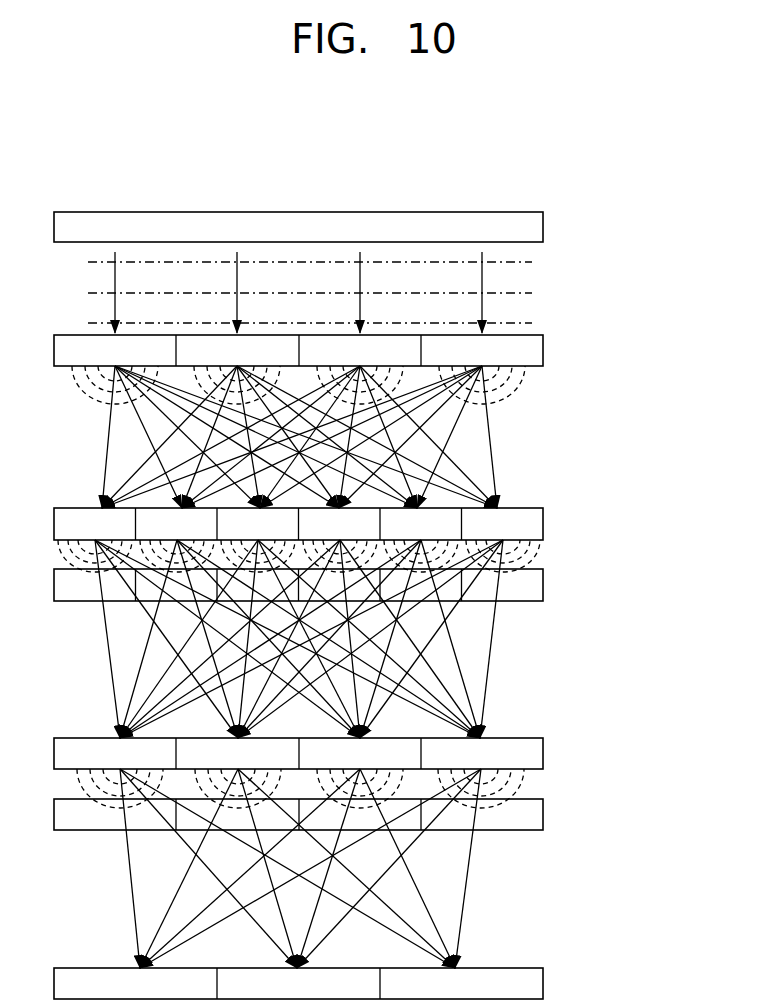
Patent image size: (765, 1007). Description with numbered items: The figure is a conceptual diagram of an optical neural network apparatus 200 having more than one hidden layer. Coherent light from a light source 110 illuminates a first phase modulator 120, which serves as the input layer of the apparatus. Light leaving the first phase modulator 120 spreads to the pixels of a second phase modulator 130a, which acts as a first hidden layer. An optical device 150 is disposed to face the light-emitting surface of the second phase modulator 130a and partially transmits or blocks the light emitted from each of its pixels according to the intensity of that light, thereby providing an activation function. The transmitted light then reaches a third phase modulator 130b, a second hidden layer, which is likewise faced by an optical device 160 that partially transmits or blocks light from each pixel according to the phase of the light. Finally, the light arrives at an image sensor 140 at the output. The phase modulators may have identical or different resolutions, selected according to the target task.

The optical neural network apparatus 200 is at (618, 156).
The light source 110 is at (543, 227).
The first phase modulator 120 is at (543, 350).
The second phase modulator 130a is at (543, 524).
The optical device 150 is at (543, 583).
The third phase modulator 130b is at (543, 755).
The optical device 160 is at (543, 813).
The image sensor 140 is at (543, 982).